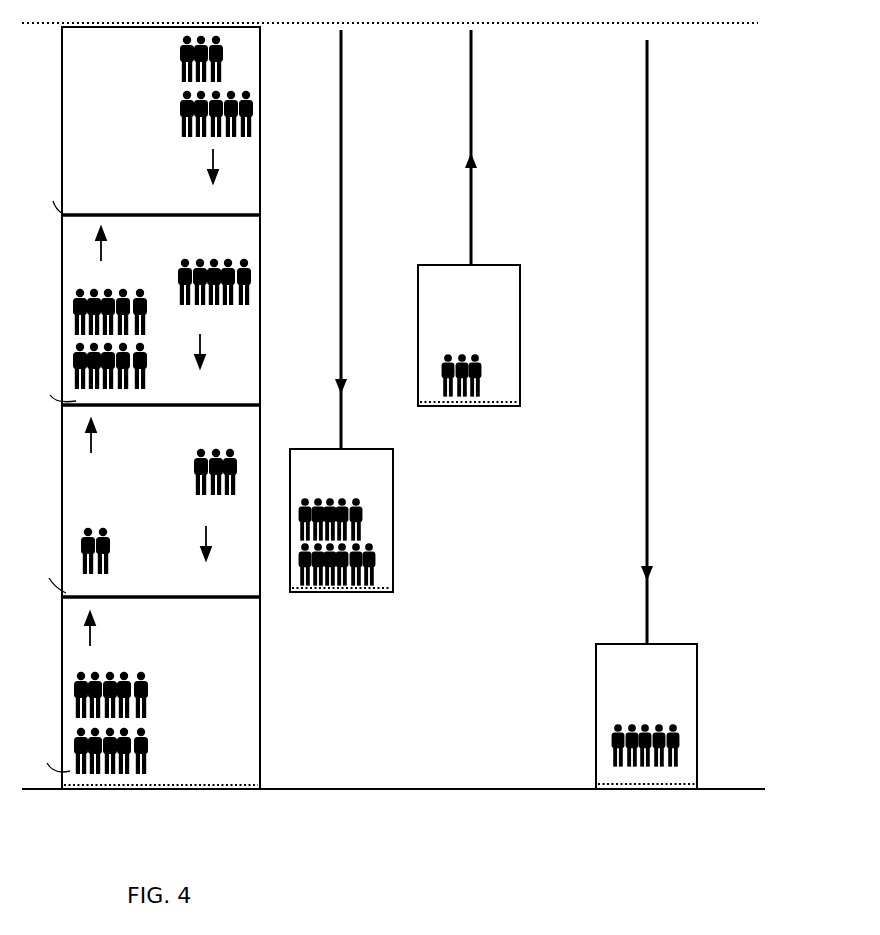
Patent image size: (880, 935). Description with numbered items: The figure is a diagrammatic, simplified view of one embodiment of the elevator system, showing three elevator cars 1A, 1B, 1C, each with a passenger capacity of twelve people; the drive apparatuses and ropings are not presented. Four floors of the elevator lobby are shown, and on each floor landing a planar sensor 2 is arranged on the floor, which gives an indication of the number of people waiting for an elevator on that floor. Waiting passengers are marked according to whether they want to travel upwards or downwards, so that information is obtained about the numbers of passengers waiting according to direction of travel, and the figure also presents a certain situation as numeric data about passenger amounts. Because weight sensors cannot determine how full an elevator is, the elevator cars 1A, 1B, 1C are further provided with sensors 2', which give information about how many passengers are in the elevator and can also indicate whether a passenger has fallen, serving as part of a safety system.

The planar sensor 2 is at (141, 408).
The elevator car 1A is at (376, 537).
The elevator car 1B is at (503, 323).
The elevator car 1C is at (688, 689).
The sensor 2' is at (493, 583).